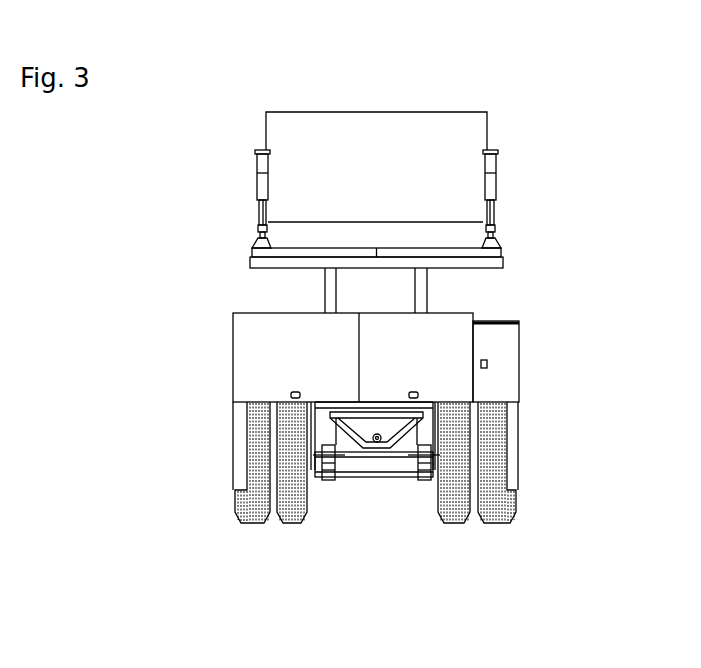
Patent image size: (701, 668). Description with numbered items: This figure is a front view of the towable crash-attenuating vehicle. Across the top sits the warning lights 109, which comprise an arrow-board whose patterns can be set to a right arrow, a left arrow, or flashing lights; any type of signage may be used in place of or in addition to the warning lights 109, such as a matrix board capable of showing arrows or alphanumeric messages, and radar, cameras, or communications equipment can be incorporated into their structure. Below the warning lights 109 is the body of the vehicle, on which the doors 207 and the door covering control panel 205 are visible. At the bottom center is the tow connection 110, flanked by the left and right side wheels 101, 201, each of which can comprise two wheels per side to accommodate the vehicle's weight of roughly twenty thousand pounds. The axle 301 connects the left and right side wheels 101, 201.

The warning lights 109 is at (452, 152).
The doors 207 is at (390, 343).
The door covering control panel 205 is at (507, 380).
The right side wheels 201 is at (300, 525).
The left side wheels 101 is at (507, 513).
The tow connection 110 is at (400, 437).
The axle 301 is at (360, 467).